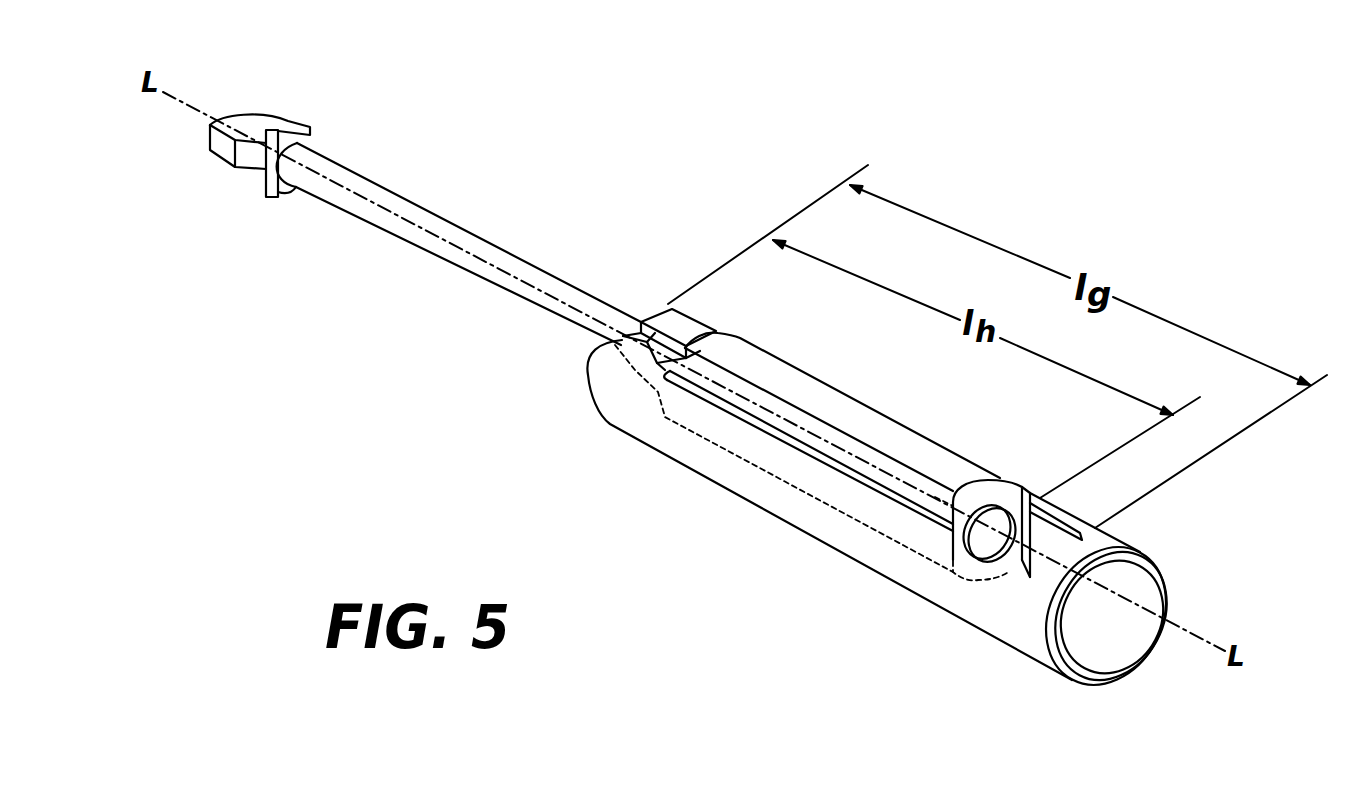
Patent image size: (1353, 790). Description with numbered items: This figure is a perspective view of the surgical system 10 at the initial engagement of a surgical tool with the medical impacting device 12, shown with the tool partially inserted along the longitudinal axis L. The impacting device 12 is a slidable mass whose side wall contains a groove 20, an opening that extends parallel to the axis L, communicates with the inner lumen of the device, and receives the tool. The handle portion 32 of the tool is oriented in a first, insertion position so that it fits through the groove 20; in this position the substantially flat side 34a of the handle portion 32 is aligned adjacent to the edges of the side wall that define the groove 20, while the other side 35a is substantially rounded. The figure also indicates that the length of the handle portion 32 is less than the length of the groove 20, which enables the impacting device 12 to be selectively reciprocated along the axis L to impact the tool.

The surgical system 10 is at (555, 105).
The medical impacting device 12 is at (640, 413).
The groove 20 is at (1014, 577).
The handle portion 32 is at (750, 357).
The first opposed side 34a is at (819, 449).
The second opposed side 35a is at (863, 423).